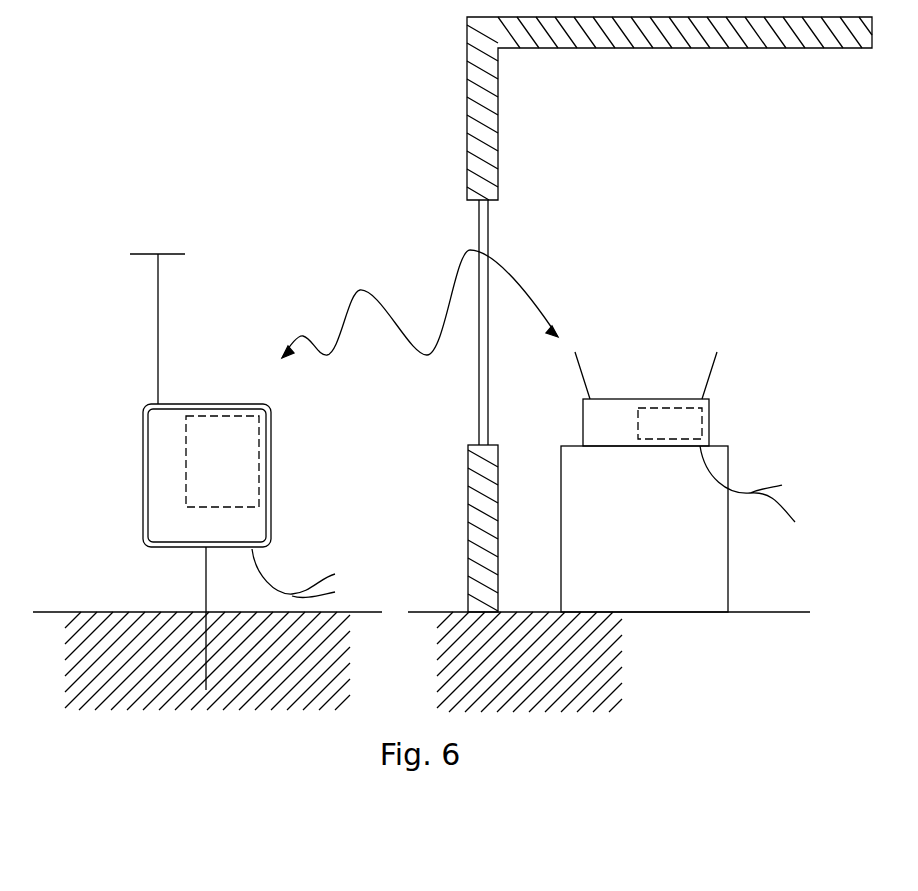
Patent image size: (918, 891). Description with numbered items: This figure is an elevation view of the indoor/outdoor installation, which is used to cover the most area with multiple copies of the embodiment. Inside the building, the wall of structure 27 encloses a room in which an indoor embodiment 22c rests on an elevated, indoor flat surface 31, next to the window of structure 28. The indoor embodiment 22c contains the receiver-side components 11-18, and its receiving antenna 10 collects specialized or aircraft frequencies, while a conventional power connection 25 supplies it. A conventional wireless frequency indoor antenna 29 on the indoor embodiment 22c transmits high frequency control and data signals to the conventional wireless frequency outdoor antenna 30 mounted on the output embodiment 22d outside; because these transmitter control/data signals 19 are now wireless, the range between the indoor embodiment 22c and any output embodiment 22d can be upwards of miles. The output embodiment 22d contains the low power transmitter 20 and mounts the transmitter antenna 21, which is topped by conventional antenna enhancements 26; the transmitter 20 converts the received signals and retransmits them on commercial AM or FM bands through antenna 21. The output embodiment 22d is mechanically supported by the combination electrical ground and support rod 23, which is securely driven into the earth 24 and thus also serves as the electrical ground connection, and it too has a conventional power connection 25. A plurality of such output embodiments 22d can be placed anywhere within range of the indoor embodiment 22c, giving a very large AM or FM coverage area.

The receiving antenna for specialized transmissions 10 is at (708, 394).
The specialized receiver, storage, timer/multiplexer and associated signals 11-18 is at (700, 420).
The transmitter control/data signals 19 is at (390, 308).
The low power transmitter 20 is at (227, 468).
The transmitter antenna 21 is at (158, 330).
The indoor embodiment 22c is at (710, 430).
The output embodiment 22d is at (143, 460).
The combination electrical ground and support rod 23 is at (206, 594).
The earth 24 is at (440, 678).
The conventional power connection 25 is at (541, 521).
The conventional antenna enhancements 26 is at (173, 254).
The wall of structure 27 is at (485, 170).
The window of structure 28 is at (480, 325).
The conventional wireless frequency indoor antenna 29 is at (587, 379).
The conventional wireless frequency outdoor antenna 30 is at (211, 406).
The elevated, indoor flat surface 31 is at (728, 590).